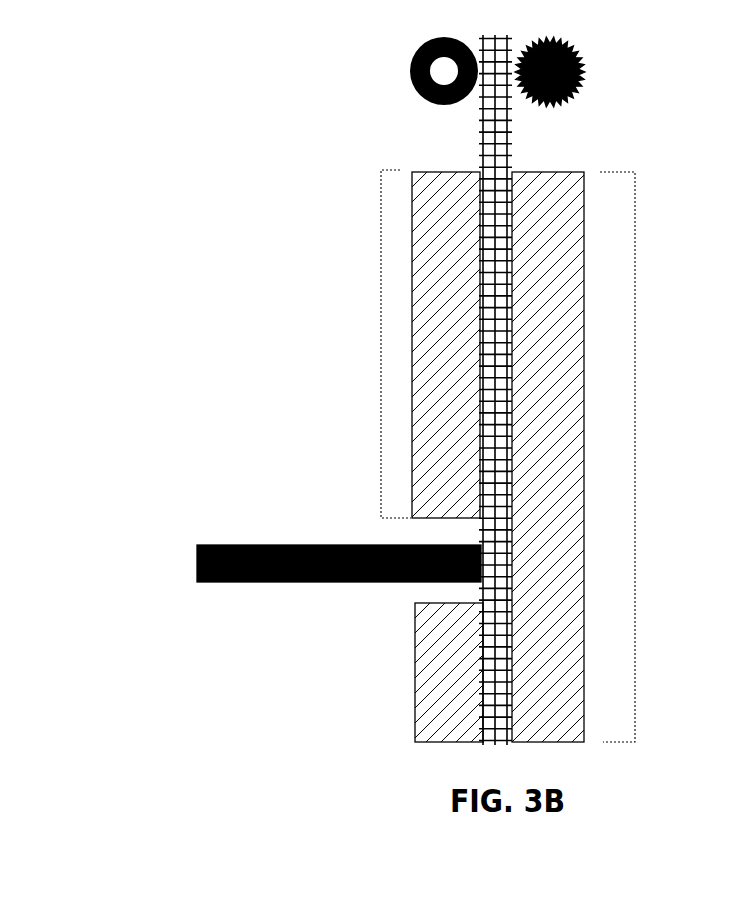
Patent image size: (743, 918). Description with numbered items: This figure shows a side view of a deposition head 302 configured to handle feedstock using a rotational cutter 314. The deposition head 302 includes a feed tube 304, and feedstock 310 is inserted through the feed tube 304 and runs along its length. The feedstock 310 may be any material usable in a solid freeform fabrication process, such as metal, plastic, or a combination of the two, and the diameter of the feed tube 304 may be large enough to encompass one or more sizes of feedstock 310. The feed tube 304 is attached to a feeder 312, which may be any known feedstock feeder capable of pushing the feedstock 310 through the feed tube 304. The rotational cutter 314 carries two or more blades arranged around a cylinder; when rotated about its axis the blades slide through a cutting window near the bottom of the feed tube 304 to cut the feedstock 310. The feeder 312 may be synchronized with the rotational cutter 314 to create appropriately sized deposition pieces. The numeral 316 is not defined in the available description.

The deposition head 302 is at (635, 445).
The feed tube 304 is at (380, 348).
The feedstock 310 is at (462, 156).
The feeder 312 is at (578, 62).
The rotational cutter 314 is at (226, 538).
The gap / slot for bar 316 is at (417, 585).